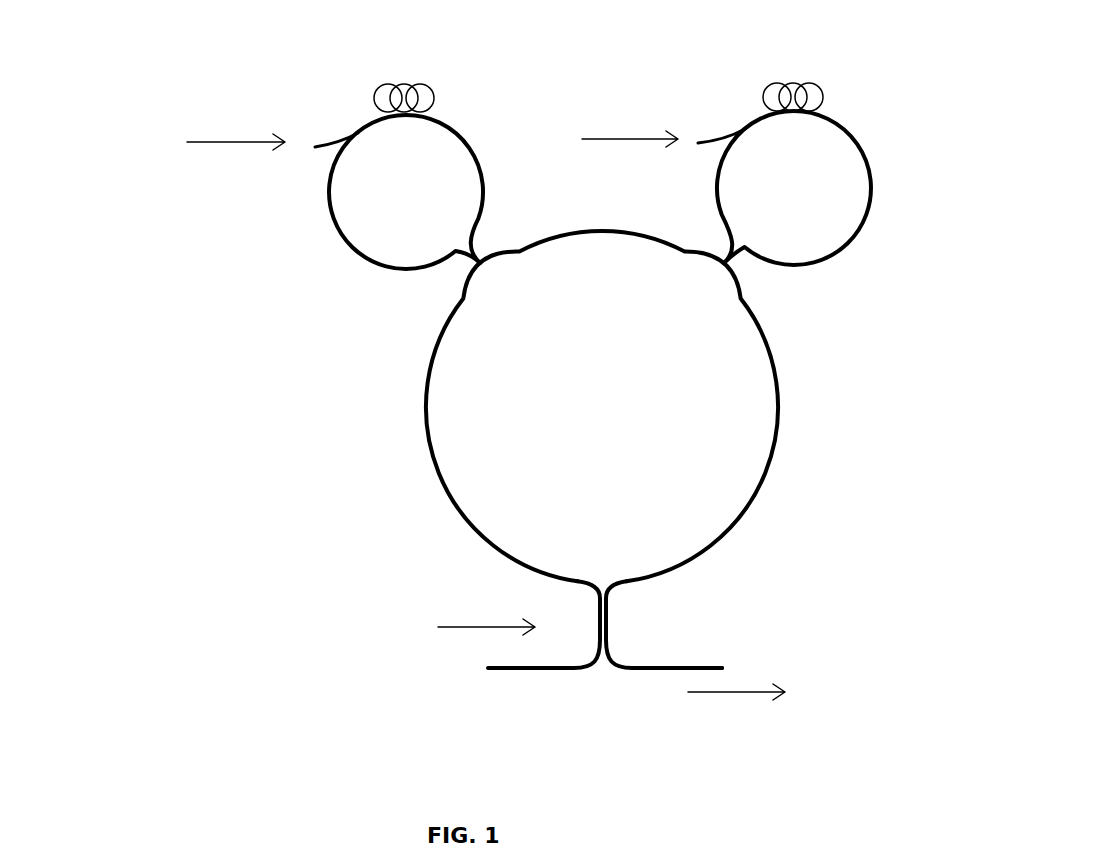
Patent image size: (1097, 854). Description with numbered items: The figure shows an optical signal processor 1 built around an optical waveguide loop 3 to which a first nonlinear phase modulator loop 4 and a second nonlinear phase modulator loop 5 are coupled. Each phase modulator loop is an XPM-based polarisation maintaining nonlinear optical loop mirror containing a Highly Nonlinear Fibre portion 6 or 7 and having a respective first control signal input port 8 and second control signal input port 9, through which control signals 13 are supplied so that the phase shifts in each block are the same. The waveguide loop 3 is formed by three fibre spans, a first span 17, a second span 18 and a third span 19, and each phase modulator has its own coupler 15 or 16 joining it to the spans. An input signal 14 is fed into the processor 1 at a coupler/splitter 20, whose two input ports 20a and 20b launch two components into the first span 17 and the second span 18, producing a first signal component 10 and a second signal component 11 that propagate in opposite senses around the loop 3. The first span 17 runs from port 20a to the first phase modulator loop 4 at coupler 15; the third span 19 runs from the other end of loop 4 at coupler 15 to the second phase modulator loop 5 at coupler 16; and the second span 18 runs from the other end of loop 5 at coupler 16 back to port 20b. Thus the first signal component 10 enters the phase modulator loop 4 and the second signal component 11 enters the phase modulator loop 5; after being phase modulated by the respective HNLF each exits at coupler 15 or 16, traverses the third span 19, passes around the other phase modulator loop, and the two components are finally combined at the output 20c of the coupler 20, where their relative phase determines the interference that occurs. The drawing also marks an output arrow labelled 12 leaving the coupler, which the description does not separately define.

The optical signal processor 1 is at (196, 207).
The optical waveguide loop 3 is at (780, 338).
The first nonlinear phase modulator loop 4 is at (352, 66).
The second nonlinear phase modulator loop 5 is at (897, 133).
The Highly Nonlinear Fibre portion 6 is at (425, 82).
The Highly Nonlinear Fibre portion 7 is at (817, 82).
The first control signal input port 8 is at (323, 148).
The second control signal input port 9 is at (700, 146).
The first signal component 10 is at (420, 462).
The second signal component 11 is at (807, 468).
The output light 12 is at (727, 693).
The control signals 13 is at (230, 142).
The input signal 14 is at (463, 628).
The coupler 15 is at (483, 265).
The coupler 16 is at (723, 273).
The first span 17 is at (433, 357).
The second span 18 is at (778, 392).
The third span 19 is at (565, 232).
The coupler/splitter 20 is at (610, 605).
The input port 20a is at (595, 577).
The input port 20b is at (612, 573).
The output 20c is at (655, 672).